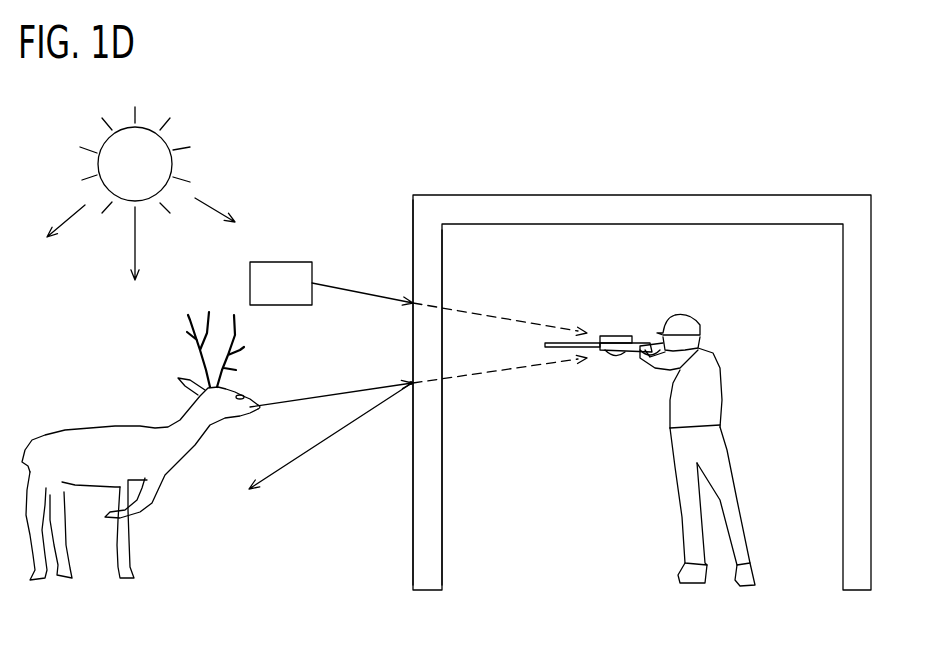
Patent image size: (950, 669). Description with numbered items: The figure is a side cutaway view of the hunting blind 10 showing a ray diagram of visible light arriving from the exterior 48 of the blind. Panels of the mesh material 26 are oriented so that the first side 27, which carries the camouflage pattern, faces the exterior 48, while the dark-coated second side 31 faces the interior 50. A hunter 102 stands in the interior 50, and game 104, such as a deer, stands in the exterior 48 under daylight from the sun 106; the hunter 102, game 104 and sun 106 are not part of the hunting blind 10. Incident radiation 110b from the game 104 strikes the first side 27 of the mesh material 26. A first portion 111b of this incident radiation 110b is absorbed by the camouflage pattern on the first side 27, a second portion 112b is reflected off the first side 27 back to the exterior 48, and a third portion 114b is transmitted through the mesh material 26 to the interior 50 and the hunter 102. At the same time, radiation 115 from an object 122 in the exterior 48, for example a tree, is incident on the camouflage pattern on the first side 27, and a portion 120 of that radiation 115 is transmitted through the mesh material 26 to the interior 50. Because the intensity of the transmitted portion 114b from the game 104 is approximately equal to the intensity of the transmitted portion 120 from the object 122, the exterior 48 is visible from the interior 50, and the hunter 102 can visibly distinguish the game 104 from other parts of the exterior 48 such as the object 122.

The hunting blind 10 is at (760, 148).
The mesh material 26 is at (610, 212).
The first side 27 is at (413, 527).
The second side 31 is at (442, 525).
The exterior 48 is at (286, 556).
The interior 50 is at (653, 279).
The hunter 102 is at (720, 360).
The game 104 is at (103, 428).
The sun 106 is at (146, 157).
The incident radiation 110b is at (331, 396).
The first portion 111b is at (410, 382).
The second portion 112b is at (323, 444).
The third portion 114b is at (525, 367).
The radiation 115 is at (371, 297).
The transmitted portion 120 is at (500, 318).
The object 122 is at (277, 262).